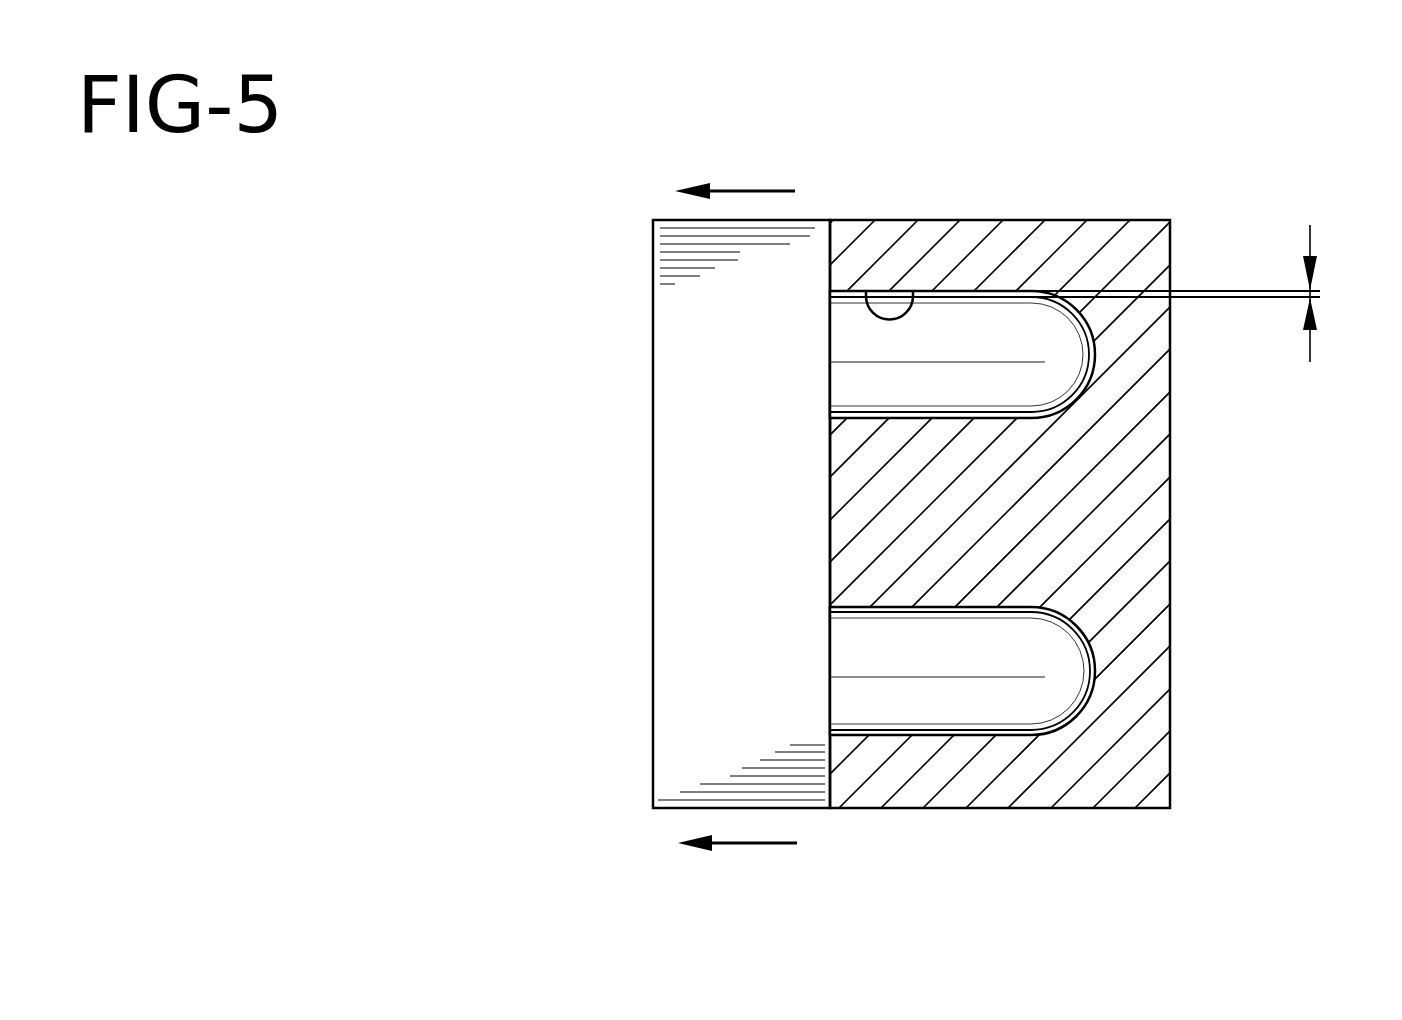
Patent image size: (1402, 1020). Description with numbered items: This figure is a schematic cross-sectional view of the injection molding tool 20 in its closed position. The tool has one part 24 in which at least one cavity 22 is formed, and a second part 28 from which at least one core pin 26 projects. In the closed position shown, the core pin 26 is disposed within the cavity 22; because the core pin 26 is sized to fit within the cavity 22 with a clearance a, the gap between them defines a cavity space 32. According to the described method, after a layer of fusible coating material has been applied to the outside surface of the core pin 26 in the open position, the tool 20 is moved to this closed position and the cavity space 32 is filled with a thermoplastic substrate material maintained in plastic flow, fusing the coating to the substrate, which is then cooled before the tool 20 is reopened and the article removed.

The injection molding tool 20 is at (405, 746).
The cavity 22 is at (912, 300).
The part 24 is at (1135, 219).
The core pin 26 is at (998, 328).
The second part 28 is at (703, 456).
The cavity space 32 is at (1091, 380).
The clearance a is at (1310, 350).